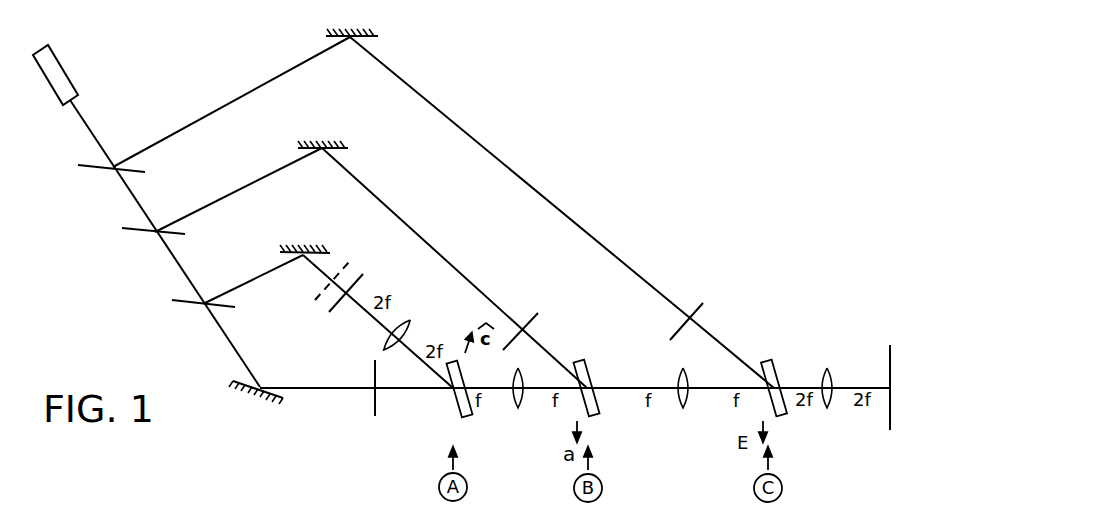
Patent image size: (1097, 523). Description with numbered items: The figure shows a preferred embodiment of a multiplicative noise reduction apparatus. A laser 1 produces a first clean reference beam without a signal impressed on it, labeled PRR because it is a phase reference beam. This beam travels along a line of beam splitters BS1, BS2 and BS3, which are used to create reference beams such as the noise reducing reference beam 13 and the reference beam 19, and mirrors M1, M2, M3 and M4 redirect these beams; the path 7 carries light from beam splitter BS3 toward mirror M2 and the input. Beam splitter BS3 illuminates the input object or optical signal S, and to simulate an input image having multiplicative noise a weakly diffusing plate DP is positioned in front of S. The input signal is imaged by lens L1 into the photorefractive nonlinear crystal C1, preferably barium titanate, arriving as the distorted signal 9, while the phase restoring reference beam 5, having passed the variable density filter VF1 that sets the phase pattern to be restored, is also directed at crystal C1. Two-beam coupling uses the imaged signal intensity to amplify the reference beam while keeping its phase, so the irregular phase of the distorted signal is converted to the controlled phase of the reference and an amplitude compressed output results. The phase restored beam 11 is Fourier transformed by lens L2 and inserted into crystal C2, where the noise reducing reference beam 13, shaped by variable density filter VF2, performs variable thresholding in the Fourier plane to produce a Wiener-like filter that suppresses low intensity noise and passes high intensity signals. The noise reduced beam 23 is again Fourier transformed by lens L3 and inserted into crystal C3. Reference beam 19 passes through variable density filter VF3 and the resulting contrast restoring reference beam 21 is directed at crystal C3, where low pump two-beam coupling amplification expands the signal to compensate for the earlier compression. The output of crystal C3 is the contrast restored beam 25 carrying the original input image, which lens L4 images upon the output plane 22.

The laser 1 is at (58, 62).
The phase reference beam PRR is at (86, 118).
The beam splitter BS1 is at (110, 181).
The beam splitter BS2 is at (149, 241).
The beam splitter BS3 is at (199, 314).
The mirror M1 is at (256, 402).
The mirror M2 is at (305, 237).
The mirror M3 is at (323, 132).
The mirror M4 is at (352, 21).
The beam path to M2 7 is at (263, 272).
The distorted signal 9 is at (424, 369).
The noise reducing reference beam 13 is at (450, 262).
The reference beam 19 is at (447, 116).
The contrast restoring reference beam 21 is at (713, 342).
The phase restoring reference beam 5 is at (403, 389).
The phase restored beam 11 is at (493, 389).
The noise reduced beam 23 is at (618, 389).
The contrast restored beam 25 is at (793, 384).
The output plane 22 is at (888, 420).
The diffusing plate DP is at (349, 262).
The input object or optical signal S is at (362, 280).
The lens L1 is at (402, 322).
The lens L2 is at (519, 408).
The lens L3 is at (683, 407).
The lens L4 is at (827, 407).
The variable density filter VF1 is at (375, 400).
The variable density filter VF2 is at (540, 327).
The variable density filter VF3 is at (706, 317).
The photorefractive nonlinear crystal C1 is at (458, 400).
The photorefractive crystal C2 is at (593, 400).
The photorefractive crystal C3 is at (781, 400).